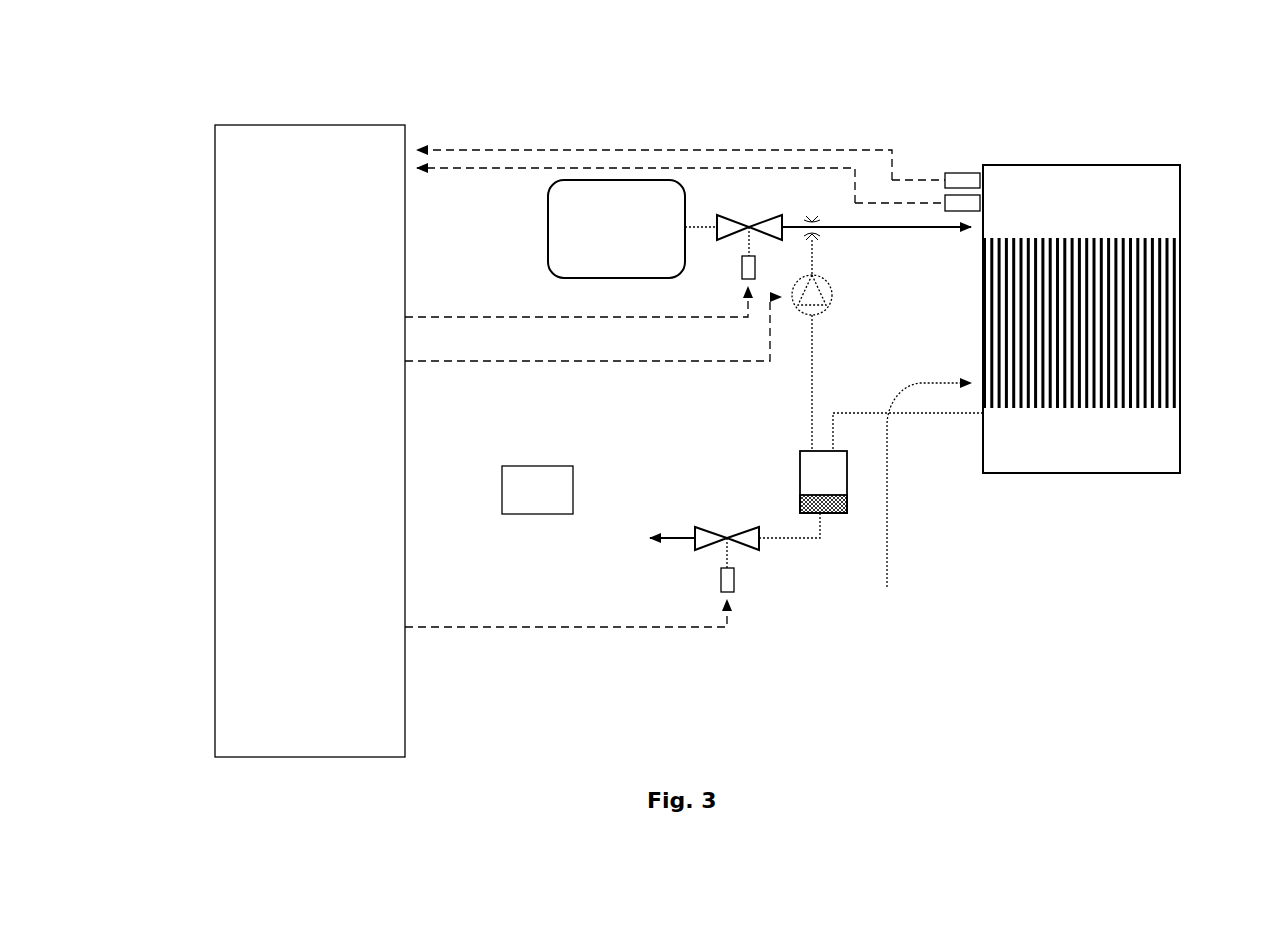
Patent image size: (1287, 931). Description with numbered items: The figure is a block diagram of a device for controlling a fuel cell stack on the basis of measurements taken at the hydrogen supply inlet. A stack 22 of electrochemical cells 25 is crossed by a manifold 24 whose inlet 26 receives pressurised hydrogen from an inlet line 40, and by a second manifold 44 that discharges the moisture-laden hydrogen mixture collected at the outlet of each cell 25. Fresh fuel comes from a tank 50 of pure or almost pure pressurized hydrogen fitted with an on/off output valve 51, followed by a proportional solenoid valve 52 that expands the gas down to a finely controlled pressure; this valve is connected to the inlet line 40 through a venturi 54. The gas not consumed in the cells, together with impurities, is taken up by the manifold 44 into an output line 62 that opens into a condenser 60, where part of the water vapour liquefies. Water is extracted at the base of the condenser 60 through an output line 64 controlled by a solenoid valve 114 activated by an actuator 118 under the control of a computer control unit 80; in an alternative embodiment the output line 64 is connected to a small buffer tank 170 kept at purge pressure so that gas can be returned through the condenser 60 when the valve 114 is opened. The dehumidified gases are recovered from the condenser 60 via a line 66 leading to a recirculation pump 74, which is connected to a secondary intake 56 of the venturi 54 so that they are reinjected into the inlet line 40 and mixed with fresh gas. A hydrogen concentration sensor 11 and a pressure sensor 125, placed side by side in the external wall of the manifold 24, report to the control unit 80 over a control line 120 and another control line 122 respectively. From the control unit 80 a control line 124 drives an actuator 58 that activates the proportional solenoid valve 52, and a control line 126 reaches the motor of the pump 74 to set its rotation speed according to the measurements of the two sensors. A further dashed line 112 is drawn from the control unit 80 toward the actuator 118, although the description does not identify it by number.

The computer control unit 80 is at (310, 441).
The control line 120 is at (470, 150).
The control line 122 is at (468, 173).
The control line 124 is at (497, 315).
The control line 126 is at (495, 360).
The purge valve control line 112 is at (498, 627).
The tank 50 is at (633, 193).
The on/off output valve 51 is at (683, 226).
The proportional solenoid valve 52 is at (736, 216).
The actuator 58 is at (742, 268).
The venturi 54 is at (812, 216).
The inlet line 40 is at (945, 229).
The secondary intake 56 is at (820, 240).
The recirculation pump 74 is at (822, 312).
The line 66 is at (808, 355).
The condenser 60 is at (808, 478).
The output line 62 is at (950, 415).
The output line 64 is at (807, 545).
The solenoid valve 114 is at (712, 540).
The actuator 118 is at (734, 581).
The stack 22 is at (922, 500).
The manifold 24 is at (1113, 220).
The inlet 26 is at (1081, 196).
The cells 25 is at (1175, 365).
The manifold 44 is at (1076, 440).
The hydrogen concentration sensor 11 is at (960, 181).
The pressure sensor 125 is at (965, 205).
The small buffer tank 170 is at (528, 490).